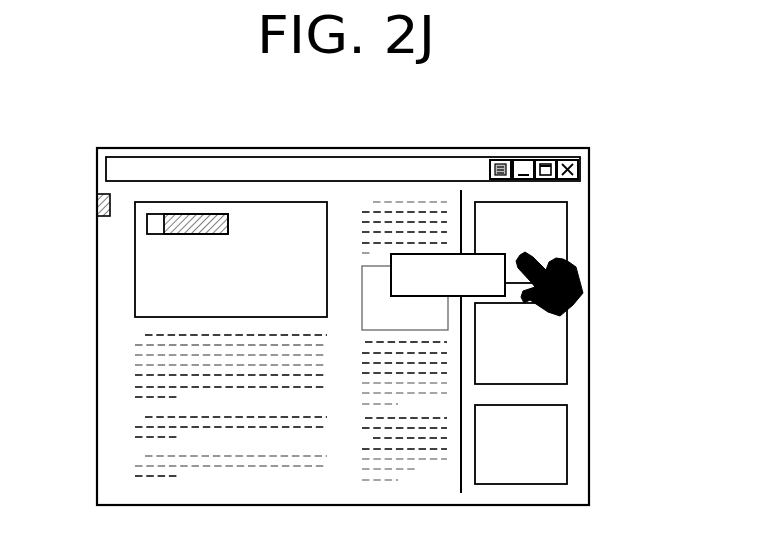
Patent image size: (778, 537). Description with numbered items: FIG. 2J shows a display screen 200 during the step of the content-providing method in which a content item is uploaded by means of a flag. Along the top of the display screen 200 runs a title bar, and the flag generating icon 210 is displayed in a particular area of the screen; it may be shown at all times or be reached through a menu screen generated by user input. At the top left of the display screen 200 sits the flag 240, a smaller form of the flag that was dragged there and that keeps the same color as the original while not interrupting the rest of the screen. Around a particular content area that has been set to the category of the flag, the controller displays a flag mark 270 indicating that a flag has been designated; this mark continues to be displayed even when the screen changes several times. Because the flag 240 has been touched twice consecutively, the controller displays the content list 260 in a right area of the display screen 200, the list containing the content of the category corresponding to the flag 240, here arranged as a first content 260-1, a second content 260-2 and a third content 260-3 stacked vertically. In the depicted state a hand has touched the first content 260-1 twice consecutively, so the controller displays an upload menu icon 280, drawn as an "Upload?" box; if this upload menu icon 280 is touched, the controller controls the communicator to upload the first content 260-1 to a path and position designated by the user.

The display screen / user terminal 200 is at (110, 461).
The flag generating icon 210 is at (498, 157).
The flag 240 is at (97, 196).
The content list 260 is at (564, 341).
The first content 260-1 is at (567, 243).
The second content item 260-2 is at (567, 339).
The third content item 260-3 is at (567, 425).
The flag mark 270 is at (188, 218).
The upload menu icon 280 is at (435, 254).